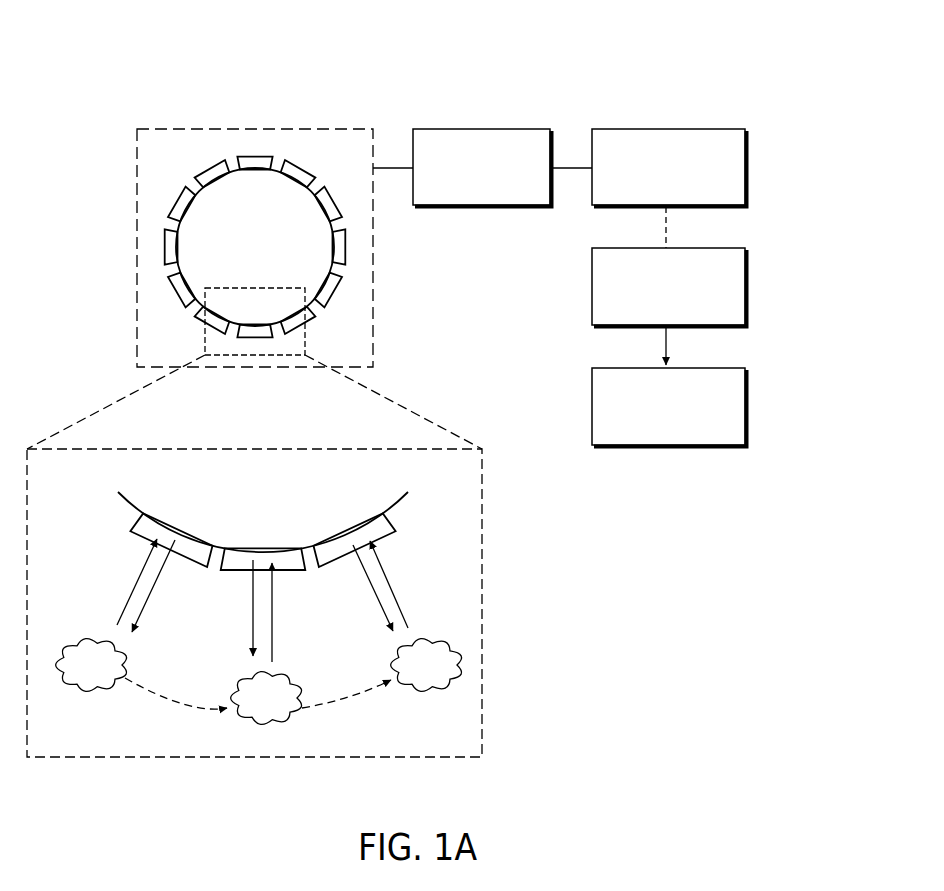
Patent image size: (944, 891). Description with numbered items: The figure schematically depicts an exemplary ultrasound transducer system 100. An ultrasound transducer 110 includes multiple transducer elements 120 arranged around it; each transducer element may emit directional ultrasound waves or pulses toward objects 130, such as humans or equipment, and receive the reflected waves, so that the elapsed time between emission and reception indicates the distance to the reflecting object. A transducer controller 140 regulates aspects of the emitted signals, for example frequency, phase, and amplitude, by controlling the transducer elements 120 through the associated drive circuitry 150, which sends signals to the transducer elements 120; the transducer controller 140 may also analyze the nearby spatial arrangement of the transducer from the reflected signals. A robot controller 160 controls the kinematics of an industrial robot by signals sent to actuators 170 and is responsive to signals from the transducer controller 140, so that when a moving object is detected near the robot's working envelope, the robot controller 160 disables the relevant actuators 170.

The ultrasound transducer system 100 is at (590, 60).
The ultrasound transducer 110 is at (140, 126).
The transducer elements 120 is at (298, 155).
The objects 130 is at (442, 678).
The transducer controller 140 is at (748, 165).
The drive circuitry 150 is at (477, 129).
The robot controller 160 is at (748, 283).
The actuators 170 is at (748, 401).